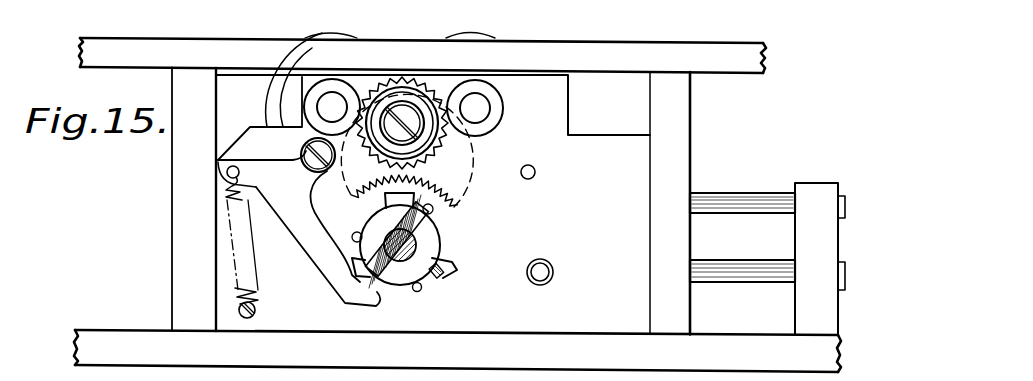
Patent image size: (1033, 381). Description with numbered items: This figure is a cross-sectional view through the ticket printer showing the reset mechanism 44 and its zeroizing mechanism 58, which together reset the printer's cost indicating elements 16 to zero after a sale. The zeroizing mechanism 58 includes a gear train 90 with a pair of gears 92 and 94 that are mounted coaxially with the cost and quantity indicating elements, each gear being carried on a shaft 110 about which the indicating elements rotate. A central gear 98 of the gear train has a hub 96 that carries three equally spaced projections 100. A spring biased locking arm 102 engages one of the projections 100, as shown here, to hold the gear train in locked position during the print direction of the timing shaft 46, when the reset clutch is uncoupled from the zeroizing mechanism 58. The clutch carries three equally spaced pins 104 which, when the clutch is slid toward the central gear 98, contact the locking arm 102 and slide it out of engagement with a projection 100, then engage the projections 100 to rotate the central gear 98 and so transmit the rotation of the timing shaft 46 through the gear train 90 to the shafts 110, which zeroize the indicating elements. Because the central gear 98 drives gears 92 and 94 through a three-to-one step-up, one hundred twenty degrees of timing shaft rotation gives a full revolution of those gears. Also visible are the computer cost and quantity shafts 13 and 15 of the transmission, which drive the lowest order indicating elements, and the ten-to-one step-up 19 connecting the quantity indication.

The computer cost shaft 13 is at (760, 205).
The computer quantity shaft 15 is at (760, 276).
The cost indicating elements 16 is at (322, 33).
The ten-to-one step-up 19 is at (488, 37).
The reset mechanism 44 is at (446, 186).
The timing shaft 46 is at (399, 262).
The zeroizing mechanism 58 is at (336, 204).
The gear train 90 is at (404, 74).
The gear 92 is at (330, 108).
The gear 94 is at (479, 124).
The hub 96 is at (427, 225).
The central gear 98 is at (447, 248).
The projections 100 is at (440, 272).
The locking arm 102 is at (330, 255).
The pins 104 is at (420, 290).
The shaft 110 is at (308, 93).